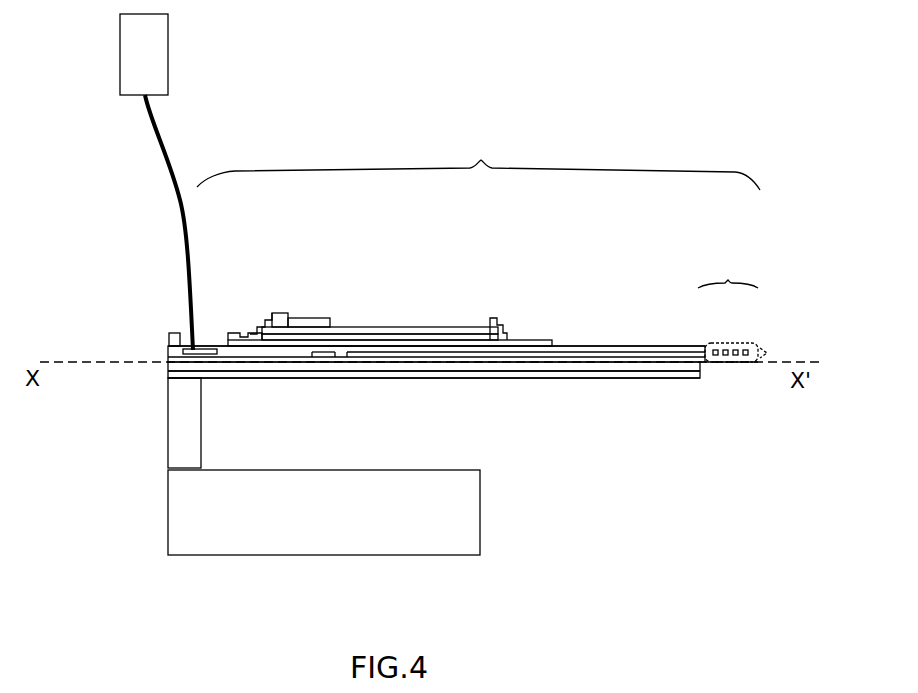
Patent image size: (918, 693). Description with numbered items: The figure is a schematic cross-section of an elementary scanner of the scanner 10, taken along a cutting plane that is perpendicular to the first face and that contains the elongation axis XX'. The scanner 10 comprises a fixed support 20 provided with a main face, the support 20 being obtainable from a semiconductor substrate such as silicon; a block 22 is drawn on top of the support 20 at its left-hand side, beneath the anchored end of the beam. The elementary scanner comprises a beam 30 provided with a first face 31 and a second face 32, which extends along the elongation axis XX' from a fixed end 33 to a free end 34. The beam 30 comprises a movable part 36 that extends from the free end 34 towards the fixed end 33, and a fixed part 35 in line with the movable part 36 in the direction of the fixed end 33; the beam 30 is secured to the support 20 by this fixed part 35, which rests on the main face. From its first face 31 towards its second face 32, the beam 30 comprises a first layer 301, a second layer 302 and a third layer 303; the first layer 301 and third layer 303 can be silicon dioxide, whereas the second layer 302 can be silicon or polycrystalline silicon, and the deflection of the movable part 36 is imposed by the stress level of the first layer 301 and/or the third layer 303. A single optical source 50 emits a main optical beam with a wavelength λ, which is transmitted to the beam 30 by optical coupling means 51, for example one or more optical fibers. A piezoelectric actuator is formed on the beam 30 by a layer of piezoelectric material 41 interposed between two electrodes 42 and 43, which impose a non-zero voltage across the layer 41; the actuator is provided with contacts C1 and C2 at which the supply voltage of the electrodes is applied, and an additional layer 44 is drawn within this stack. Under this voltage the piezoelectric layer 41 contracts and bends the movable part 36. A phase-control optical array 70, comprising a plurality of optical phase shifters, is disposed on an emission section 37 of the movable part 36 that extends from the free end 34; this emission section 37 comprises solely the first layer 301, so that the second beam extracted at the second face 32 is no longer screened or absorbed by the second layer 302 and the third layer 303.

The scanner 10 is at (664, 497).
The fixed support 20 is at (177, 517).
The spacer block 22 is at (177, 445).
The beam 30 is at (283, 364).
The first layer 301 is at (608, 346).
The second layer 302 is at (380, 378).
The third layer 303 is at (330, 378).
The first face 31 is at (527, 280).
The second face 32 is at (522, 440).
The fixed end 33 is at (171, 342).
The free end 34 is at (753, 362).
The fixed part 35 is at (180, 346).
The movable part 36 is at (478, 163).
The emission section 37 is at (728, 272).
The layer of piezoelectric material 41 is at (335, 333).
The electrode 42 is at (302, 328).
The electrode 43 is at (432, 328).
The intermediate layer 44 is at (395, 337).
The contact C1 is at (240, 333).
The contact C2 is at (282, 314).
The optical source 50 is at (160, 43).
The optical coupling means 51 is at (181, 162).
The phase-control optical array 70 is at (747, 344).